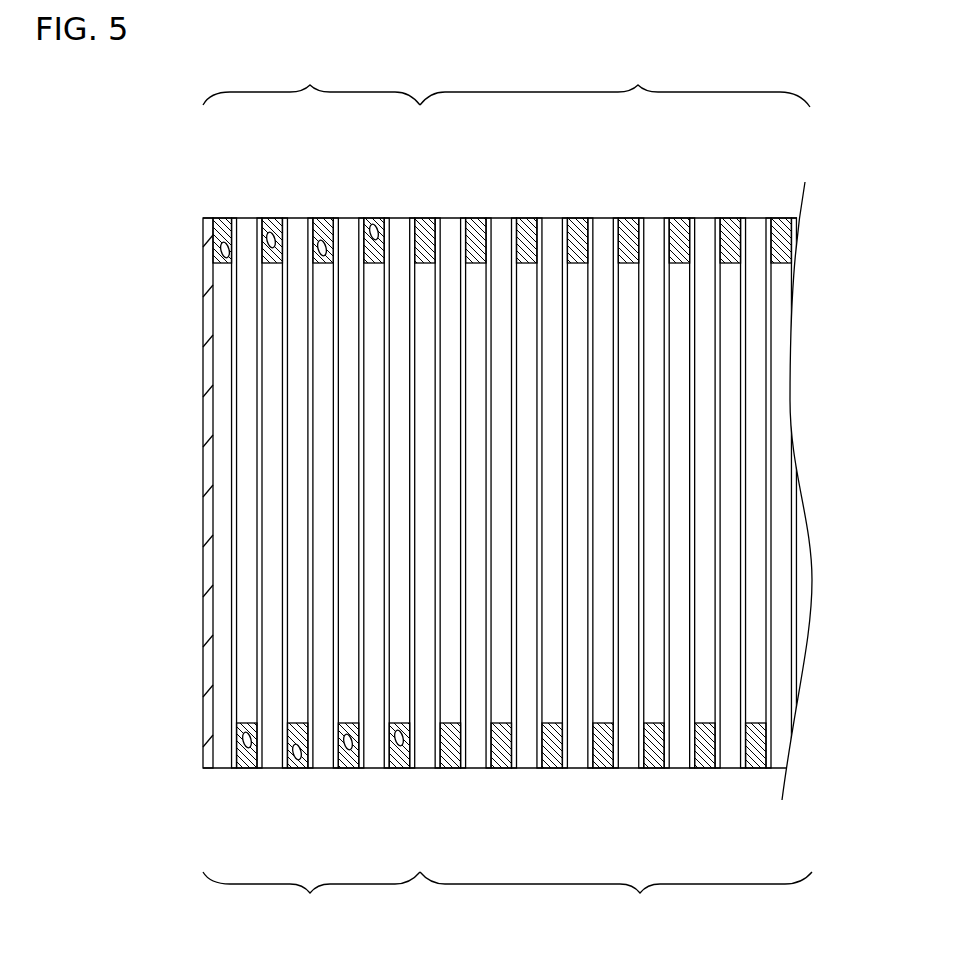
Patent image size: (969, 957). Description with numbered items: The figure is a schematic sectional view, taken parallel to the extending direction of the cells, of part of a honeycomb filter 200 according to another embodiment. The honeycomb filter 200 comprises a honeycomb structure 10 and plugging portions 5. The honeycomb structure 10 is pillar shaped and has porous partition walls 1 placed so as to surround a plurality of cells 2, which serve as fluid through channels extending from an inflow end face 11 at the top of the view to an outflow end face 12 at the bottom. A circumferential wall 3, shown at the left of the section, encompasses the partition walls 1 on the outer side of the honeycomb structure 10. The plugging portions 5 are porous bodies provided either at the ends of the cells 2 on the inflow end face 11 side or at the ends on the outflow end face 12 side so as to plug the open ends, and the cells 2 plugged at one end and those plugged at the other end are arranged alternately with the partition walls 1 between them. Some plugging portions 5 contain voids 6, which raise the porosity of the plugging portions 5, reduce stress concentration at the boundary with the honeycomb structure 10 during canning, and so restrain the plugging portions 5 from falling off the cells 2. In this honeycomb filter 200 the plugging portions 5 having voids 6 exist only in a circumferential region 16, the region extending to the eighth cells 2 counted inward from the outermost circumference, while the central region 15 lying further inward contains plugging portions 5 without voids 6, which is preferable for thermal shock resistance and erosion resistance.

The honeycomb filter 200 is at (860, 71).
The partition walls 1 is at (638, 238).
The cells 2 is at (553, 242).
The circumferential wall 3 is at (208, 378).
The plugging portions 5 is at (325, 236).
The voids 6 is at (227, 252).
The honeycomb structure 10 is at (201, 290).
The inflow end face 11 is at (228, 200).
The outflow end face 12 is at (225, 780).
The central region 15 is at (616, 490).
The circumferential region 16 is at (311, 491).